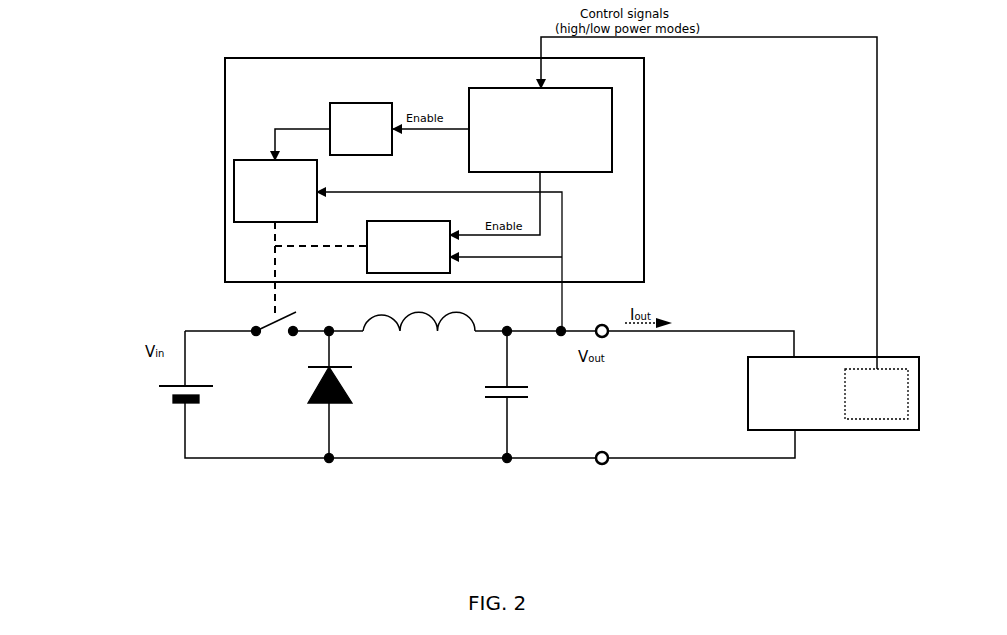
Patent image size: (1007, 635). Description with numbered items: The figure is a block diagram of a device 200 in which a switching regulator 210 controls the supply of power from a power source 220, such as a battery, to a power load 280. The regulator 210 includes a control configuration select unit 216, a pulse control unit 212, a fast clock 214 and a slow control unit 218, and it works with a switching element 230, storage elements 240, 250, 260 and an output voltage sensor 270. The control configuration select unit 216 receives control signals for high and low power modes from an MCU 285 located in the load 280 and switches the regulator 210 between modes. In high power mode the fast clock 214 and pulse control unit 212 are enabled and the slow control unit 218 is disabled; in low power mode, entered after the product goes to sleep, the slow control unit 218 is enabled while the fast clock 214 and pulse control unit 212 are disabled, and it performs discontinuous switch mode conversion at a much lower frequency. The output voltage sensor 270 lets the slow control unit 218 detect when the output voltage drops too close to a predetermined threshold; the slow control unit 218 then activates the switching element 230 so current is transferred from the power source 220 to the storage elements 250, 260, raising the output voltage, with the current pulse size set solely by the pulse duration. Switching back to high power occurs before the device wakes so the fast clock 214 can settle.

The device 200 is at (105, 80).
The switching regulator 210 is at (225, 170).
The pulse control unit 212 is at (265, 160).
The fast clock 214 is at (340, 103).
The control configuration select unit 216 is at (477, 97).
The slow control unit 218 is at (415, 221).
The power source 220 is at (155, 385).
The switching element 230 is at (250, 318).
The storage element 240 is at (305, 387).
The storage element 250 is at (460, 340).
The storage element 260 is at (540, 390).
The output voltage sensor 270 is at (570, 300).
The power load 280 is at (828, 415).
The MCU 285 is at (893, 380).